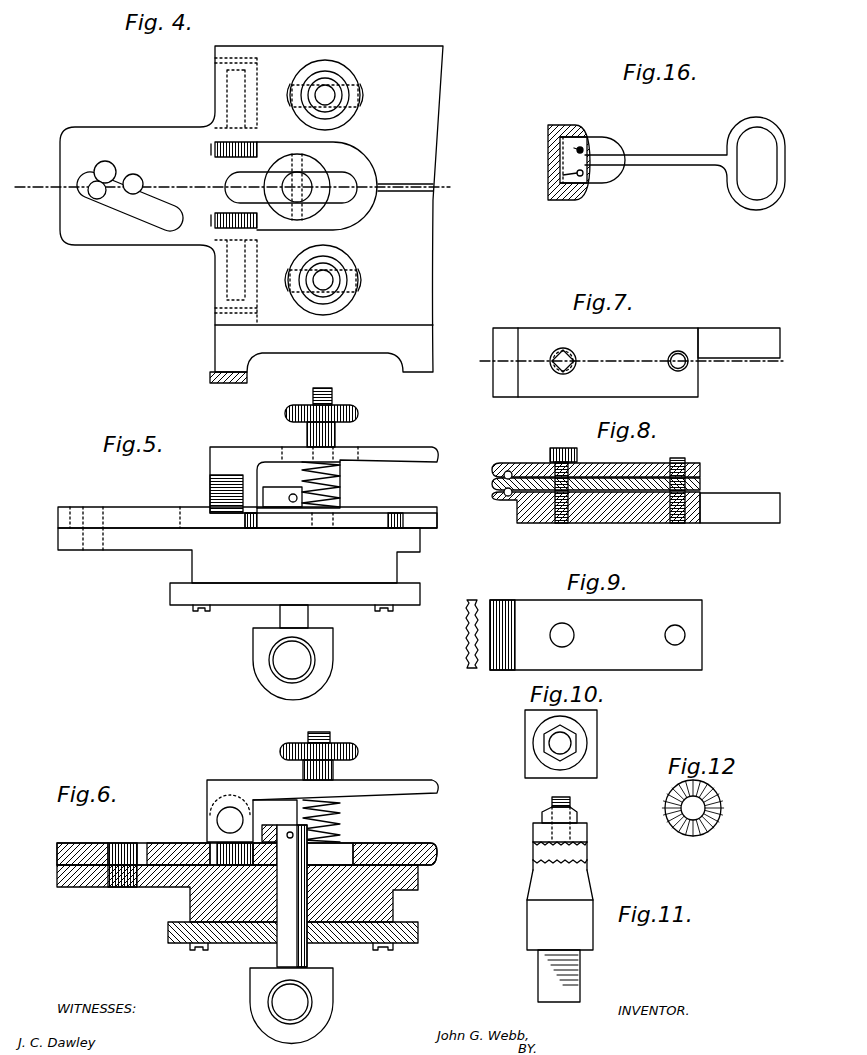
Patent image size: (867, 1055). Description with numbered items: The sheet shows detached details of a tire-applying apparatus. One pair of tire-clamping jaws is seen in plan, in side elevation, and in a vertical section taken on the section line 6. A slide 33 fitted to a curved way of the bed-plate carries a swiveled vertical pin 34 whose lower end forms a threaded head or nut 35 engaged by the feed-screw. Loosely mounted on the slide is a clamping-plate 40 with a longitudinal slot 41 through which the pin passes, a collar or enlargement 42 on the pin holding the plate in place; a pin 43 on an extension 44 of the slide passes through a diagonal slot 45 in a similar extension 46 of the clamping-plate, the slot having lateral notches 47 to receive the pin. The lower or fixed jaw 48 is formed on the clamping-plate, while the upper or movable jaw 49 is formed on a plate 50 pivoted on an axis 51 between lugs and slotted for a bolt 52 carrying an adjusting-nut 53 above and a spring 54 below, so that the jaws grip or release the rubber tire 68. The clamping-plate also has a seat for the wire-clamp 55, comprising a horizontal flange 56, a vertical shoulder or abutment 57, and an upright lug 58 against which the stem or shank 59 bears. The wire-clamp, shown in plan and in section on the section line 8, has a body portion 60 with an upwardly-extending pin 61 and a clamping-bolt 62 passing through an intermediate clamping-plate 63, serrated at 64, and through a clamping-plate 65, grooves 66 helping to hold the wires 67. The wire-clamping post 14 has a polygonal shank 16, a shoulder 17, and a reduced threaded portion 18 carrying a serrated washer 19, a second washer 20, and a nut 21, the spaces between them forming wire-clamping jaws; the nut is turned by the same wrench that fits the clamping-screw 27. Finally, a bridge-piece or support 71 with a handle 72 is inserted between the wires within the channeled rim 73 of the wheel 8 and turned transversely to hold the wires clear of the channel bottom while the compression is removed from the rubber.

In FIG. 4, the section line 6 is at (237, 178).
In FIG. 7, the section line 8 is at (630, 362).
In FIG. 11, the wire-clamping post 14 is at (585, 892).
In FIG. 11, the shank 16 is at (580, 968).
In FIG. 11, the shoulder 17 is at (588, 863).
In FIG. 10, the reduced threaded portion 18 is at (560, 743).
In FIG. 11, the reduced threaded portion 18 is at (566, 798).
In FIG. 11, the washer 19 is at (588, 845).
In FIG. 12, the washer 19 is at (695, 836).
In FIG. 11, the second loose washer 20 is at (588, 828).
In FIG. 10, the nut 21 is at (545, 750).
In FIG. 11, the nut 21 is at (542, 815).
In FIG. 16, the screw 27 is at (552, 127).
In FIG. 5, the slide 33 is at (295, 580).
In FIG. 6, the slide 33 is at (395, 910).
In FIG. 5, the vertical pin 34 is at (280, 618).
In FIG. 6, the vertical pin 34 is at (307, 950).
In FIG. 5, the threaded head or nut 35 is at (333, 657).
In FIG. 6, the threaded head or nut 35 is at (333, 985).
In FIG. 4, the clamping-plate 40 is at (218, 185).
In FIG. 5, the clamping-plate 40 is at (190, 513).
In FIG. 6, the clamping-plate 40 is at (200, 843).
In FIG. 4, the longitudinal slot 41 is at (225, 178).
In FIG. 6, the longitudinal slot 41 is at (345, 851).
In FIG. 4, the collar or enlargement 42 is at (310, 172).
In FIG. 5, the collar or enlargement 42 is at (272, 487).
In FIG. 6, the collar or enlargement 42 is at (271, 822).
In FIG. 4, the pin 43 is at (98, 198).
In FIG. 5, the pin 43 is at (95, 507).
In FIG. 6, the pin 43 is at (122, 843).
In FIG. 4, the extension of the slide 44 is at (297, 187).
In FIG. 5, the extension of the slide 44 is at (58, 538).
In FIG. 6, the extension of the slide 44 is at (75, 887).
In FIG. 4, the diagonal slot 45 is at (153, 218).
In FIG. 4, the extension of the clamping-plate 46 is at (76, 237).
In FIG. 5, the extension of the clamping-plate 46 is at (58, 514).
In FIG. 6, the extension of the clamping-plate 46 is at (68, 843).
In FIG. 4, the lateral notches 47 is at (108, 162).
In FIG. 5, the lower or fixed jaw 48 is at (437, 508).
In FIG. 6, the lower or fixed jaw 48 is at (437, 851).
In FIG. 5, the upper or movable jaw 49 is at (437, 462).
In FIG. 6, the upper or movable jaw 49 is at (438, 790).
In FIG. 4, the plate 50 is at (345, 165).
In FIG. 5, the plate 50 is at (404, 447).
In FIG. 6, the plate 50 is at (360, 784).
In FIG. 4, the axis 51 is at (284, 95).
In FIG. 6, the axis 51 is at (232, 807).
In FIG. 4, the bolt 52 is at (335, 92).
In FIG. 5, the bolt 52 is at (332, 394).
In FIG. 6, the bolt 52 is at (330, 740).
In FIG. 4, the adjusting-nut 53 is at (304, 76).
In FIG. 5, the adjusting-nut 53 is at (358, 414).
In FIG. 6, the adjusting-nut 53 is at (357, 750).
In FIG. 5, the spring 54 is at (340, 480).
In FIG. 6, the spring 54 is at (340, 806).
In FIG. 7, the wire-clamping device 55 is at (683, 328).
In FIG. 8, the wire-clamping device 55 is at (703, 470).
In FIG. 4, the horizontal extension or flange 56 is at (306, 341).
In FIG. 5, the horizontal extension or flange 56 is at (352, 528).
In FIG. 4, the vertical shoulder or abutment 57 is at (348, 328).
In FIG. 5, the vertical shoulder or abutment 57 is at (372, 512).
In FIG. 4, the upright lug or projection 58 is at (222, 384).
In FIG. 5, the upright lug or projection 58 is at (210, 482).
In FIG. 7, the stem or shank 59 is at (739, 343).
In FIG. 8, the stem or shank 59 is at (740, 508).
In FIG. 8, the body portion 60 is at (636, 523).
In FIG. 7, the upwardly-extending pin 61 is at (679, 352).
In FIG. 8, the upwardly-extending pin 61 is at (679, 458).
In FIG. 7, the clamping-bolt 62 is at (572, 357).
In FIG. 8, the clamping-bolt 62 is at (565, 448).
In FIG. 8, the intermediate clamping-plate 63 is at (494, 484).
In FIG. 9, the intermediate clamping-plate 63 is at (596, 635).
In FIG. 9, the serrations 64 is at (478, 670).
In FIG. 8, the clamping-plate 65 is at (592, 465).
In FIG. 8, the grooves 66 is at (508, 471).
In FIG. 16, the wires 67 is at (584, 148).
In FIG. 16, the rubber tire 68 is at (622, 153).
In FIG. 16, the bridge-piece or support 71 is at (563, 175).
In FIG. 16, the handle 72 is at (680, 158).
In FIG. 16, the channeled rim 73 is at (574, 148).